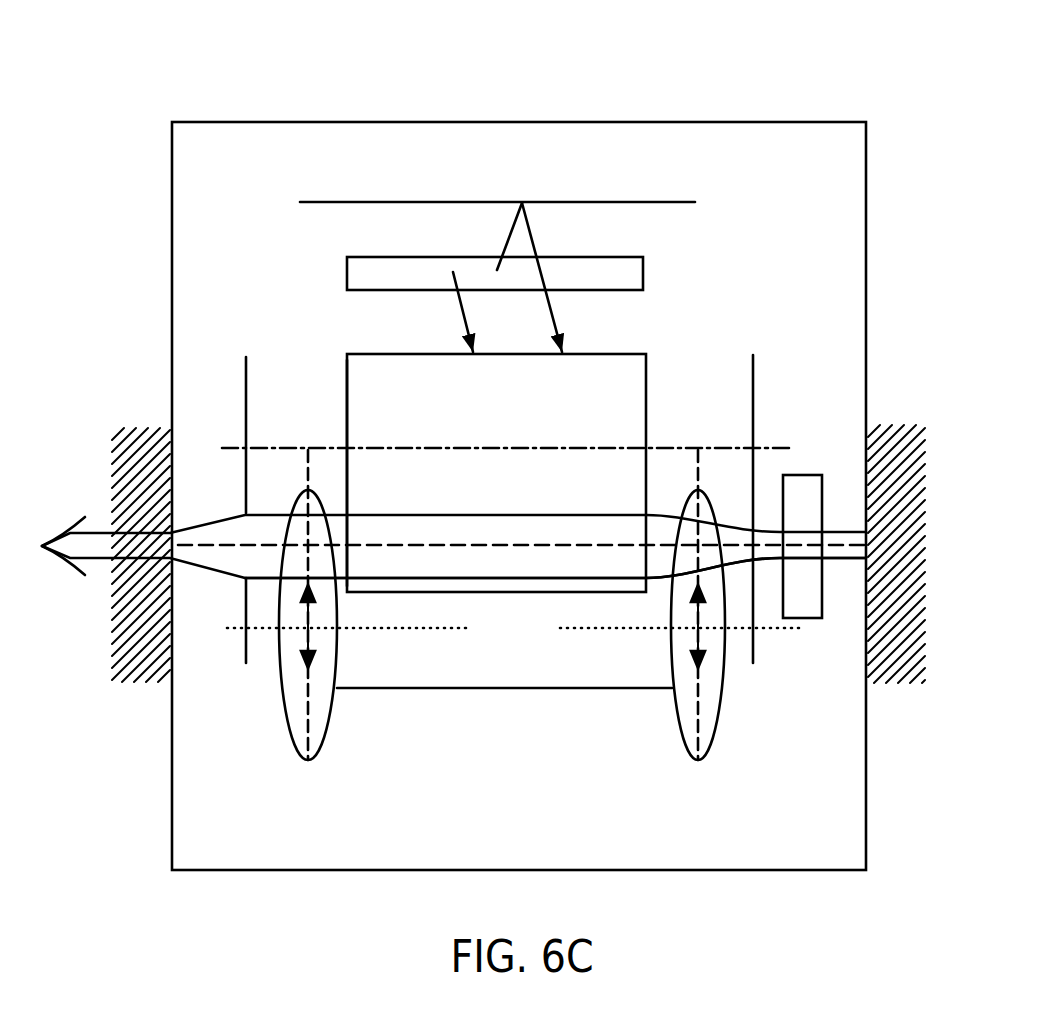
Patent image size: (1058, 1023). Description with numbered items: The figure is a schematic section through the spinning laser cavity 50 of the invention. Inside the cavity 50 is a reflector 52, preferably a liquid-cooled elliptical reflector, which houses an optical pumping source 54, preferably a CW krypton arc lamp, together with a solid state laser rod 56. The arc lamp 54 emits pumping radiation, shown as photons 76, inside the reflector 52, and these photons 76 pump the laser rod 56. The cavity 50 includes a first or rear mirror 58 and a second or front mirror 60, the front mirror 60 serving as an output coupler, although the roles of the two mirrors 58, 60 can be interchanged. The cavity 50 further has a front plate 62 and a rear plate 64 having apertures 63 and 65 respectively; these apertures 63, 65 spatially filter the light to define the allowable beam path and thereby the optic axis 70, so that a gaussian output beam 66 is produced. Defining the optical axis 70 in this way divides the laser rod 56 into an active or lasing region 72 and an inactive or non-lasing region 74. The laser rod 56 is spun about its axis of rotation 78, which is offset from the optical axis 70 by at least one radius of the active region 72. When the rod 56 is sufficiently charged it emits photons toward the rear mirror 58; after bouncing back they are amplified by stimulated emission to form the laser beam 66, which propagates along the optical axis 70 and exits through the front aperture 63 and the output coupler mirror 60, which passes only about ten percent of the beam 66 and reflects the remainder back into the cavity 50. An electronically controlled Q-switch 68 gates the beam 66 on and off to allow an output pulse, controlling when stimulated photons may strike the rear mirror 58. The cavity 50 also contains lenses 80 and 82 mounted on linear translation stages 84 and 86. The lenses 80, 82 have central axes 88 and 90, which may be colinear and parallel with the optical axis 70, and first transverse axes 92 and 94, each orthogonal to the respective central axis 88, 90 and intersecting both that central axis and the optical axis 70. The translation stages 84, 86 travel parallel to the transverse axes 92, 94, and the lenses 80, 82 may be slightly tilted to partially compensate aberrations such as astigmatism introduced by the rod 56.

The spinning laser cavity 50 is at (537, 121).
The reflector 52 is at (378, 202).
The optical pumping source 54 is at (643, 265).
The laser rod 56 is at (402, 353).
The rear mirror 58 is at (868, 455).
The front mirror 60 is at (173, 508).
The front plate 62 is at (246, 365).
The front aperture 63 is at (243, 580).
The rear plate 64 is at (753, 380).
The rear aperture 65 is at (760, 560).
The laser beam 66 is at (98, 525).
The Q-switch 68 is at (822, 595).
The optical axis 70 is at (455, 545).
The active region 72 is at (405, 565).
The inactive region 74 is at (347, 393).
The photons 76 is at (462, 313).
The axis of rotation 78 is at (538, 447).
The first lens 80 is at (322, 738).
The second lens 82 is at (705, 760).
The linear translation stage 84 is at (325, 655).
The linear translation stage 86 is at (673, 688).
The central axis 88 is at (470, 628).
The central axis 90 is at (577, 632).
The first transverse axis 92 is at (310, 716).
The first transverse axis 94 is at (698, 693).